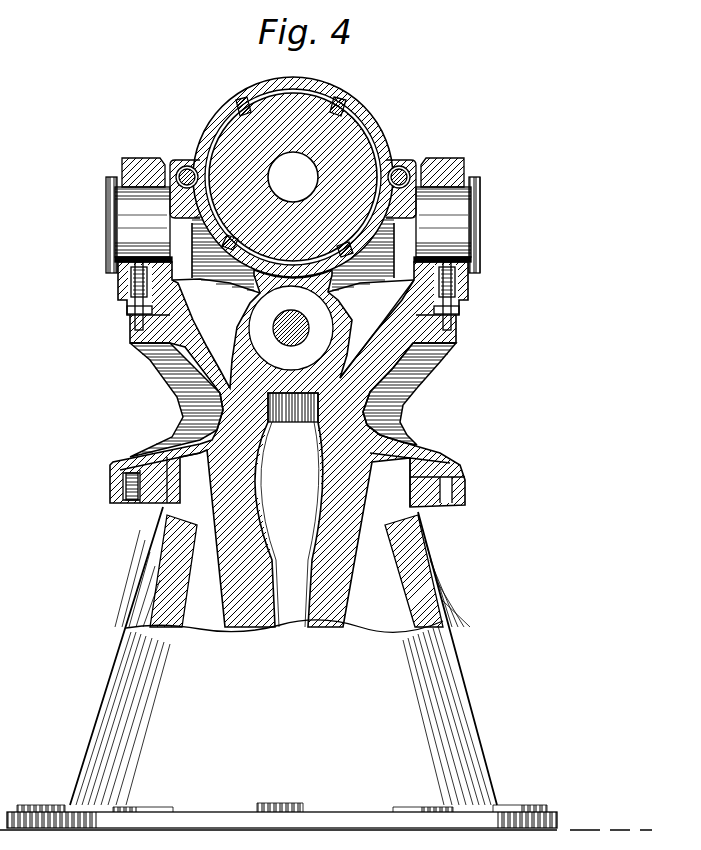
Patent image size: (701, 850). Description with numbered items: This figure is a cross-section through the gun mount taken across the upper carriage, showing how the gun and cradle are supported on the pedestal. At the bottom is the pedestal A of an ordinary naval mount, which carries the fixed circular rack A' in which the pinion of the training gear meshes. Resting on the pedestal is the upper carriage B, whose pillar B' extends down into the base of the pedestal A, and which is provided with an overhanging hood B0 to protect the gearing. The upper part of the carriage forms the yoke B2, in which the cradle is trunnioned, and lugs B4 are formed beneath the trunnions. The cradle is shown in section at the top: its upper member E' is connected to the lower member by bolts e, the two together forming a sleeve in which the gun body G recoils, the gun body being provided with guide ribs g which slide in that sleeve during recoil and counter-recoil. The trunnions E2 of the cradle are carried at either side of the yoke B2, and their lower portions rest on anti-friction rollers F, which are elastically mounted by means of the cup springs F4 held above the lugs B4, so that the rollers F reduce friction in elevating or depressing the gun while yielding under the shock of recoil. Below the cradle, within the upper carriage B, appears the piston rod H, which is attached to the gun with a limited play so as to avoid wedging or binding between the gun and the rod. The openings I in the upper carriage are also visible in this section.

The pedestal A is at (326, 668).
The fixed circular rack A' is at (292, 502).
The upper carriage B is at (289, 422).
The pillar B' is at (294, 536).
The yoke B2 is at (402, 357).
The lugs B4 is at (128, 330).
The overhanging hood B0 is at (112, 480).
The upper member of the cradle E' is at (293, 163).
The trunnions E2 is at (133, 220).
The bolts e is at (180, 160).
The anti-friction rollers F is at (108, 260).
The cup springs F4 is at (128, 313).
The gun body G is at (367, 152).
The guide ribs g is at (232, 102).
The piston rod H is at (279, 338).
The opening in pedestal I is at (349, 340).